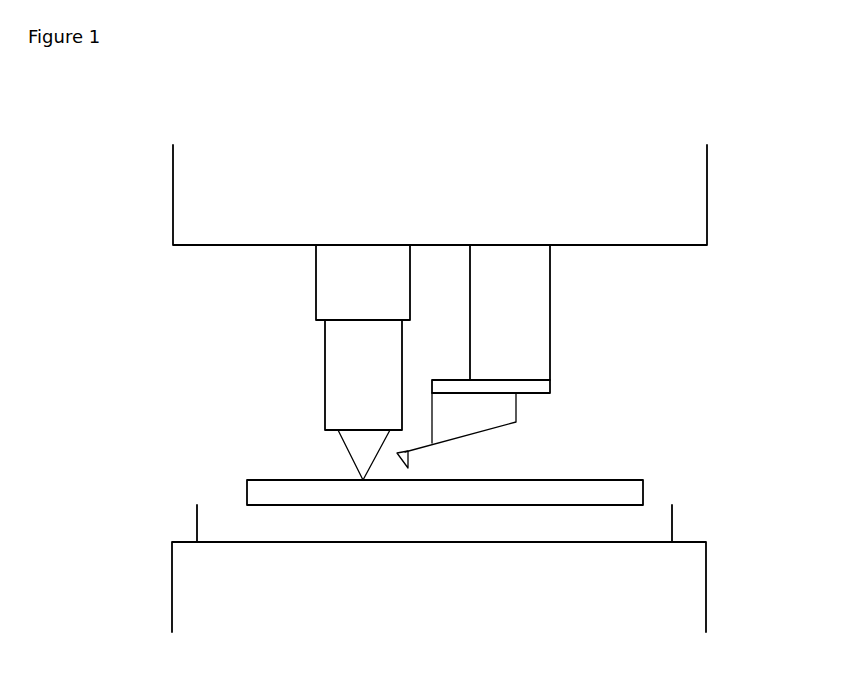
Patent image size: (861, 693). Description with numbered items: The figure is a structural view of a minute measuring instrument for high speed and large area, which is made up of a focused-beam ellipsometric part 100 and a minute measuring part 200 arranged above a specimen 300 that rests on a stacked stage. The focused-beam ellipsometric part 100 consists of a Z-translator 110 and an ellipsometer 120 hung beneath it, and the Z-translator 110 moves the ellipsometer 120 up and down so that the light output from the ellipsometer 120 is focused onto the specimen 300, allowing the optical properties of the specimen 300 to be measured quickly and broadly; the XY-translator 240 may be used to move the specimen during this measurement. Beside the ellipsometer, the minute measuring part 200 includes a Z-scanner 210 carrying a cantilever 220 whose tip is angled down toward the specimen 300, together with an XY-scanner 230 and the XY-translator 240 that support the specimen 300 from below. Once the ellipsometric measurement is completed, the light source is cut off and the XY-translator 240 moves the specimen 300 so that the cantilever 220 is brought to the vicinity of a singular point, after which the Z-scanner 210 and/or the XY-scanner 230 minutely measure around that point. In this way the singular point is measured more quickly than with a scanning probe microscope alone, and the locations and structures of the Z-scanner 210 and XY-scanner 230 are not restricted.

The focused-beam ellipsometric part 100 is at (393, 190).
The Z-translator 110 is at (316, 274).
The ellipsometer 120 is at (324, 370).
The minute measuring part 200 is at (540, 190).
The Z-scanner 210 is at (548, 308).
The cantilever 220 is at (440, 450).
The specimen 300 is at (642, 490).
The XY-scanner 230 is at (672, 522).
The XY-translator 240 is at (707, 590).